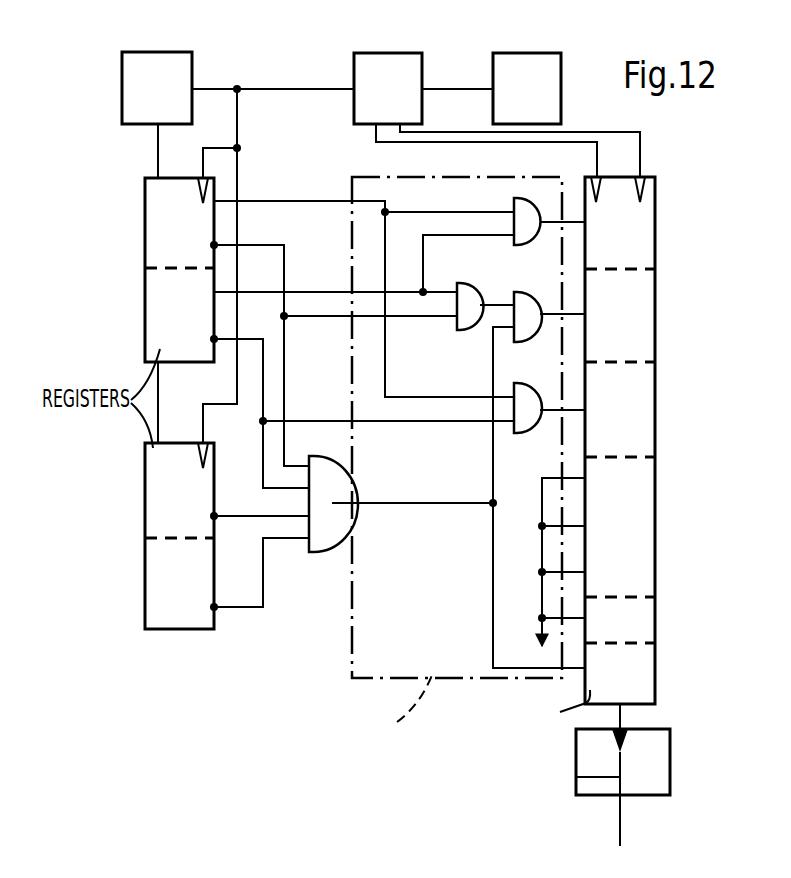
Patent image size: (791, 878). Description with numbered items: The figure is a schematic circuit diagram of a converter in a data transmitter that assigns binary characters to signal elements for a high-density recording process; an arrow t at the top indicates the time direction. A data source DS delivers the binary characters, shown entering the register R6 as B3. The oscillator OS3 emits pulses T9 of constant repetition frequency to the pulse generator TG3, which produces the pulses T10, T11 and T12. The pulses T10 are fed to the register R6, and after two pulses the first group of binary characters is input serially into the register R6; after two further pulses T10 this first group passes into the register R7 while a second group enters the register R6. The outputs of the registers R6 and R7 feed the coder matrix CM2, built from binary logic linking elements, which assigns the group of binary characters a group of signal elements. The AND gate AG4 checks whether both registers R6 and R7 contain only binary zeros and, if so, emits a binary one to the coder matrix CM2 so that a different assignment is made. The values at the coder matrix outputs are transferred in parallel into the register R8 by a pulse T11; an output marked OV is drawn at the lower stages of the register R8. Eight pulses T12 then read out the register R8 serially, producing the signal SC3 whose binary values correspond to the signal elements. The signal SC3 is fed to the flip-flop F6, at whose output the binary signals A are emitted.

The data source DS is at (182, 65).
The timing generator TG3 is at (388, 88).
The oscillator OS3 is at (527, 88).
The register R6 is at (146, 225).
The register R7 is at (146, 491).
The register R8 is at (653, 420).
The AND gate AG4 is at (391, 520).
The coder matrix CM2 is at (352, 655).
The flip-flop F6 is at (587, 755).
The signal SC3 is at (637, 708).
The overflow output OV is at (548, 567).
The data bus B3 is at (133, 135).
The pulses T9 is at (478, 78).
The pulses T10 is at (307, 78).
The pulse T11 is at (420, 150).
The pulses T12 is at (656, 130).
The binary signals A is at (631, 823).
The time axis t is at (695, 20).